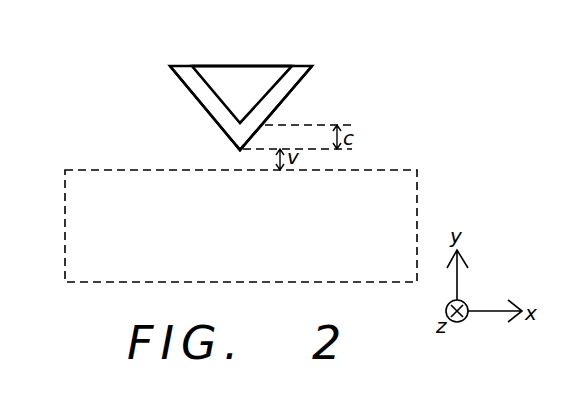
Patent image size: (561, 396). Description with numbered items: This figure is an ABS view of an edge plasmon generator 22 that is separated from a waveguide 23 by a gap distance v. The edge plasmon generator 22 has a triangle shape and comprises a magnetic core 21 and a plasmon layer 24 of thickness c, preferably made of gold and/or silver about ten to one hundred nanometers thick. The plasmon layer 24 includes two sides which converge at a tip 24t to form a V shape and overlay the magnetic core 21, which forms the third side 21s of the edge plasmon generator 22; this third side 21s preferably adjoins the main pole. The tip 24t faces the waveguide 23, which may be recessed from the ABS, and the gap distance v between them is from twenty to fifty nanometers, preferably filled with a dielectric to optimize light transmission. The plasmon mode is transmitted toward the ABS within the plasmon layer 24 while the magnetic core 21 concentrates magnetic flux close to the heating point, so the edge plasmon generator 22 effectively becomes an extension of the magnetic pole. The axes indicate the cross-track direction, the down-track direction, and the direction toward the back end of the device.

The magnetic core 21 is at (255, 75).
The third side 21s is at (206, 66).
The edge plasmon generator 22 is at (185, 111).
The waveguide 23 is at (397, 188).
The plasmon layer 24 is at (295, 75).
The tip 24t is at (240, 150).